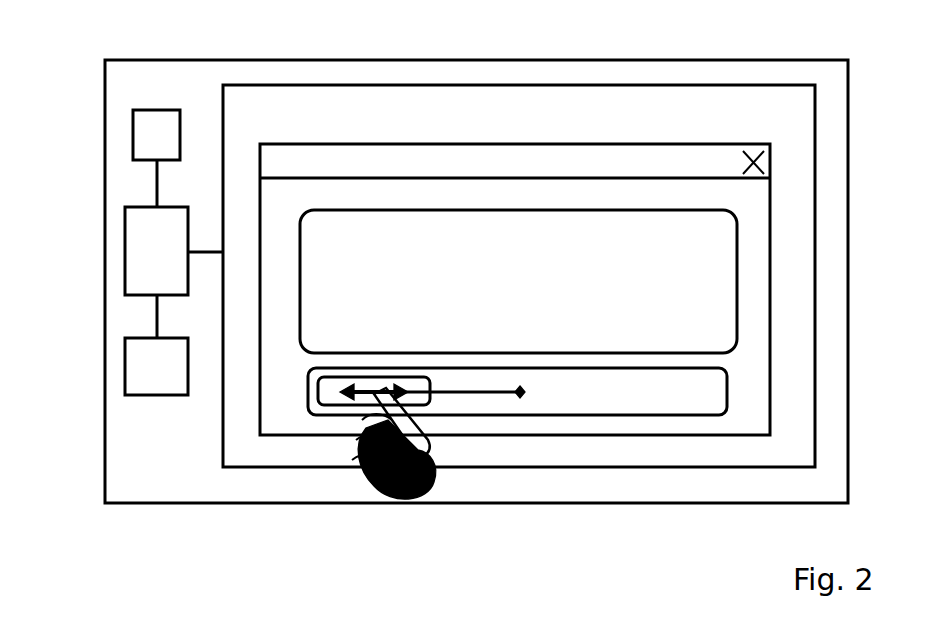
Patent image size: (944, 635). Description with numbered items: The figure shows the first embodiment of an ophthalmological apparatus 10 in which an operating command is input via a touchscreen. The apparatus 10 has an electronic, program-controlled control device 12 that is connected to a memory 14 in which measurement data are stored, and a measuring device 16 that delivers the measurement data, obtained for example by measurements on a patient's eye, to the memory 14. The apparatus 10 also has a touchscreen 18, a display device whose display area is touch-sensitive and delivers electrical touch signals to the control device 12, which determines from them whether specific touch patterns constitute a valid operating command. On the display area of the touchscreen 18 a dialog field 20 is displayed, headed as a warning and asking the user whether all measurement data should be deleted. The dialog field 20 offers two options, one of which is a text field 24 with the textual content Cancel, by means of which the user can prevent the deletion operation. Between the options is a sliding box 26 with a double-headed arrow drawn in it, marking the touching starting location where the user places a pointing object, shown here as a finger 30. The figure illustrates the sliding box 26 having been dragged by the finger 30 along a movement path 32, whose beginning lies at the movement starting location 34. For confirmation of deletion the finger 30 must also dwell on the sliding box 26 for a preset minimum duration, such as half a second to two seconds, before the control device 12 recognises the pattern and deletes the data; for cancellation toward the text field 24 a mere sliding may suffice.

The ophthalmological apparatus 10 is at (589, 58).
The control device 12 is at (125, 272).
The memory 14 is at (130, 148).
The measuring device 16 is at (125, 375).
The touchscreen 18 is at (330, 85).
The dialog field 20 is at (460, 144).
The text field 24 is at (660, 405).
The sliding box 26 is at (308, 398).
The finger 30 is at (368, 418).
The movement path 32 is at (470, 392).
The movement starting location 34 is at (518, 392).